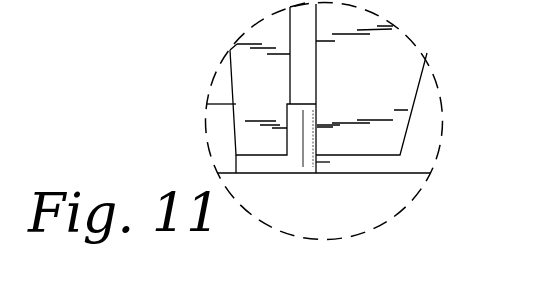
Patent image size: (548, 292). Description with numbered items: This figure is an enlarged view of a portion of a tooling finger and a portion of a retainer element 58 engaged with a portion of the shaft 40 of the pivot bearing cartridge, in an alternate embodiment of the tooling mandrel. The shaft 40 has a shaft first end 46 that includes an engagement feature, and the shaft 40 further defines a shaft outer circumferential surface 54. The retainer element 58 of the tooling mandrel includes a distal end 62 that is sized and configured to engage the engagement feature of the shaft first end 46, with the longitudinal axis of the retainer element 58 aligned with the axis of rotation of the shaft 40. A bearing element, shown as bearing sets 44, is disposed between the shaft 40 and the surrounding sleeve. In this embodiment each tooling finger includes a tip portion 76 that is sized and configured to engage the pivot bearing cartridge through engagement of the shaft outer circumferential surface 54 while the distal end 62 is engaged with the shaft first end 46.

The shaft 40 is at (222, 113).
The bearing sets 44 is at (396, 198).
The shaft first end 46 is at (223, 147).
The shaft outer circumferential surface 54 is at (316, 162).
The retainer element 58 is at (272, 21).
The distal end 62 is at (262, 115).
The tip portion 76 is at (408, 31).